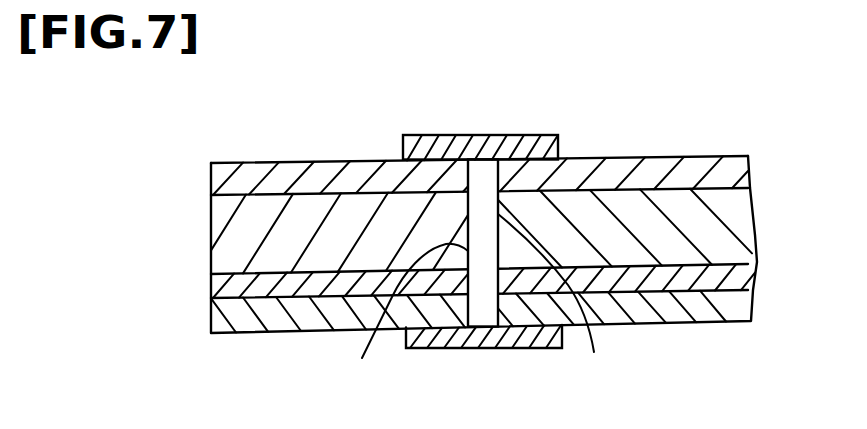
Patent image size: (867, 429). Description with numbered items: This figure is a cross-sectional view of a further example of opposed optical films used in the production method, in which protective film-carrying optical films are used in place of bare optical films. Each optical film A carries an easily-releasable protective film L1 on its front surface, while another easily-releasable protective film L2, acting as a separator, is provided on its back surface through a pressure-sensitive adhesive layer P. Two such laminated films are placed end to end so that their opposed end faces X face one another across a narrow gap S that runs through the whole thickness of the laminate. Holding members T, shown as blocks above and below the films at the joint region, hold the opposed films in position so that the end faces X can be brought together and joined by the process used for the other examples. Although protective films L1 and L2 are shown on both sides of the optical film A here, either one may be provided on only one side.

The easily-releasable protective film L1 is at (268, 170).
The easily-releasable protective film (separator) L2 is at (240, 325).
The optical film A is at (220, 235).
The pressure-sensitive adhesive layer P is at (220, 290).
The gap S is at (480, 172).
The holding member T is at (558, 143).
The opposed end faces X is at (474, 308).